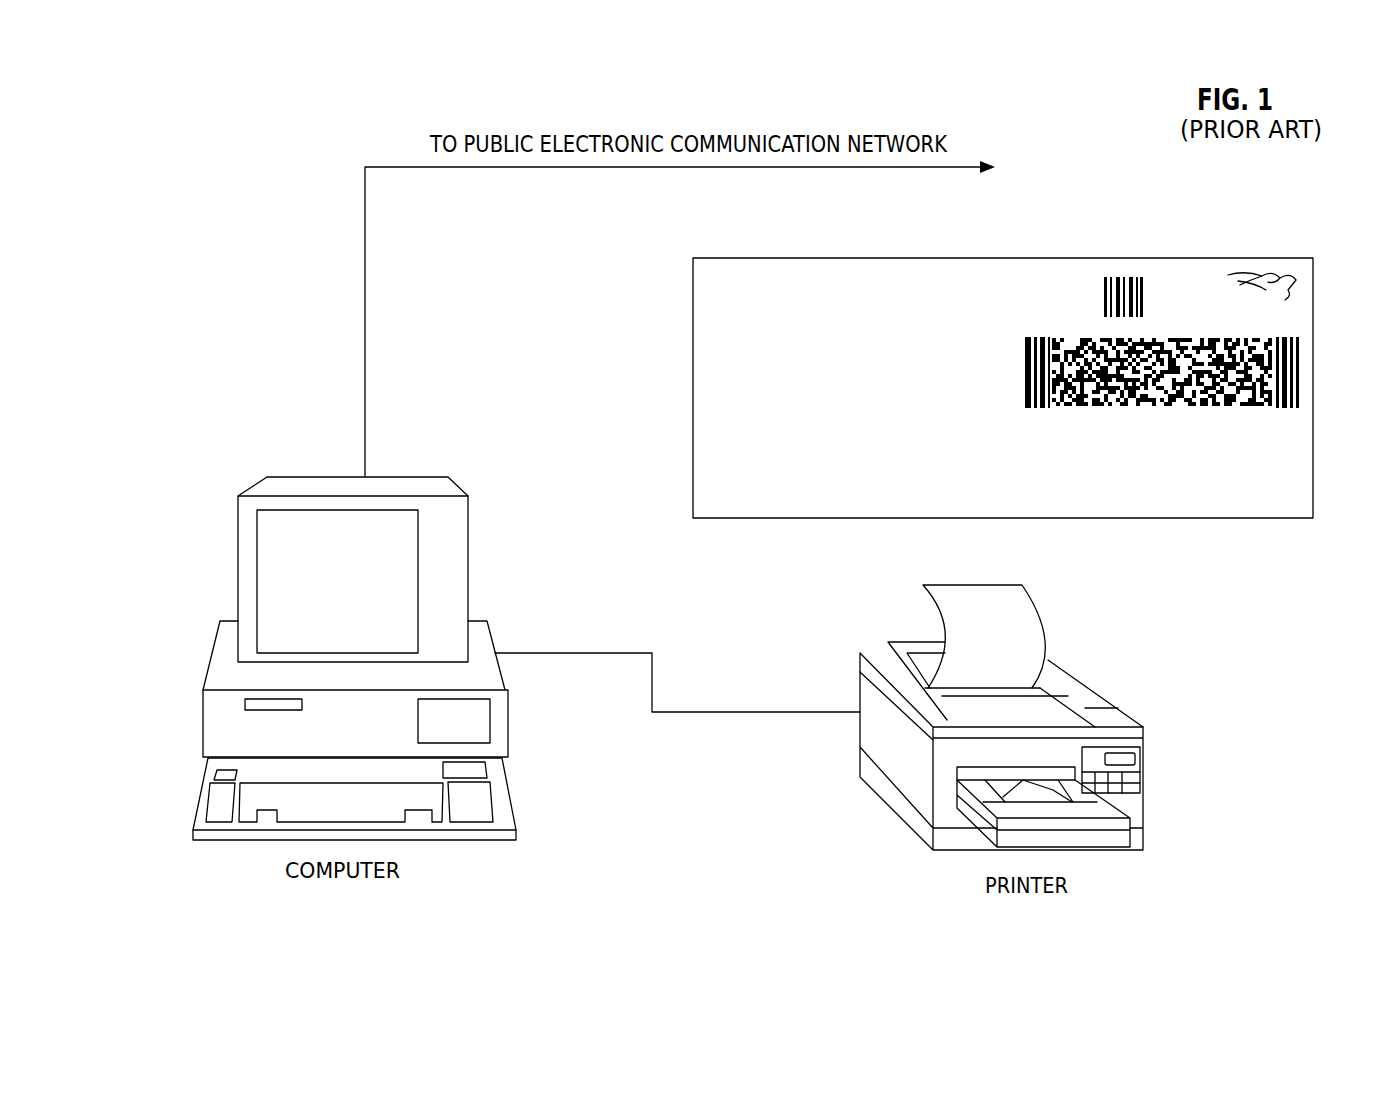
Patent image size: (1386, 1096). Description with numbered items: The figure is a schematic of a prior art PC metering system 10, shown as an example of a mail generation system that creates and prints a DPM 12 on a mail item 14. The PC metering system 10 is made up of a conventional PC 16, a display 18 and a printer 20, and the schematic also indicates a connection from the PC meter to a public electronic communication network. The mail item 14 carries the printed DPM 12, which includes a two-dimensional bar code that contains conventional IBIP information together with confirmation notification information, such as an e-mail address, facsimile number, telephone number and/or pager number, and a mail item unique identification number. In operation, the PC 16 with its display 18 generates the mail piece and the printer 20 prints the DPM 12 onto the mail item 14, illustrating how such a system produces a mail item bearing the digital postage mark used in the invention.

The PC metering system 10 is at (265, 440).
The DPM 12 is at (1222, 404).
The mail item 14 is at (1207, 518).
The PC 16 is at (203, 725).
The display 18 is at (470, 560).
The printer 20 is at (887, 780).